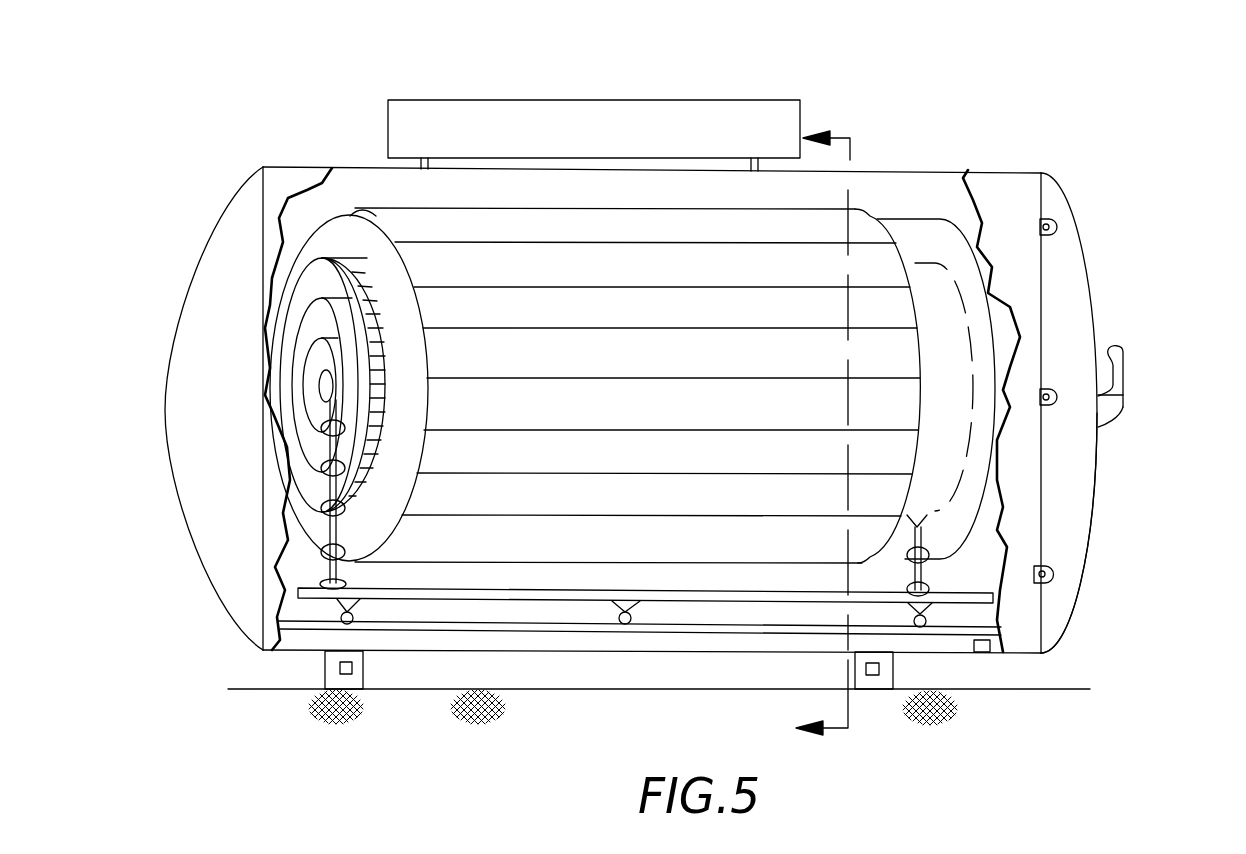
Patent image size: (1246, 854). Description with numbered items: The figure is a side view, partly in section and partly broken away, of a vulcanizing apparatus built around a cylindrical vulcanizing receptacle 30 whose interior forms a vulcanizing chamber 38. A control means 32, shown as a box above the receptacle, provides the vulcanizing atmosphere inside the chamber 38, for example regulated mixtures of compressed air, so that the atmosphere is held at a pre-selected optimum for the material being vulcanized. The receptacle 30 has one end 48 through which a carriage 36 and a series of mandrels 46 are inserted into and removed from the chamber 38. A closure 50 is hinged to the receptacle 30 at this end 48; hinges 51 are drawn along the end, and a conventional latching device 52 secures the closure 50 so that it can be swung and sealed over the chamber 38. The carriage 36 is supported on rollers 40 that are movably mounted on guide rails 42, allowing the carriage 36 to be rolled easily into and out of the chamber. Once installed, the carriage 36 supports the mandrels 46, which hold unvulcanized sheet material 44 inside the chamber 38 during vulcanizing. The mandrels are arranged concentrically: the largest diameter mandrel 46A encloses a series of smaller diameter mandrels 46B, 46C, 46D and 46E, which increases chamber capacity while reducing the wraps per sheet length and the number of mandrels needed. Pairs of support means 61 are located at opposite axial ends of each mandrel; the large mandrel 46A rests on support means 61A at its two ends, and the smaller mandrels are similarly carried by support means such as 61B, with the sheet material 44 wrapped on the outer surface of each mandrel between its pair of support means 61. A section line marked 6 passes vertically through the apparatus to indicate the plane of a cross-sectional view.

The section line 6- 6 is at (835, 432).
The vulcanizing receptacle 30 is at (1030, 158).
The control means 32 is at (782, 100).
The carriage 36 is at (740, 603).
The vulcanizing chamber 38 is at (916, 199).
The rollers 40 is at (348, 618).
The guide rails 42 is at (990, 656).
The sheet material 44 is at (737, 423).
The mandrels 46 is at (360, 190).
The largest diameter mandrel 46A is at (300, 225).
The smaller mandrel 46B is at (307, 277).
The smaller mandrel 46C is at (305, 322).
The smaller mandrel 46D is at (305, 372).
The smaller mandrel 46E is at (320, 400).
The end 48 is at (1110, 257).
The closure 50 is at (1093, 458).
The hinges 51 is at (1058, 223).
The latching device 52 is at (1123, 358).
The support means 61 is at (305, 570).
The support means 61A is at (335, 582).
The support means 61B is at (322, 532).